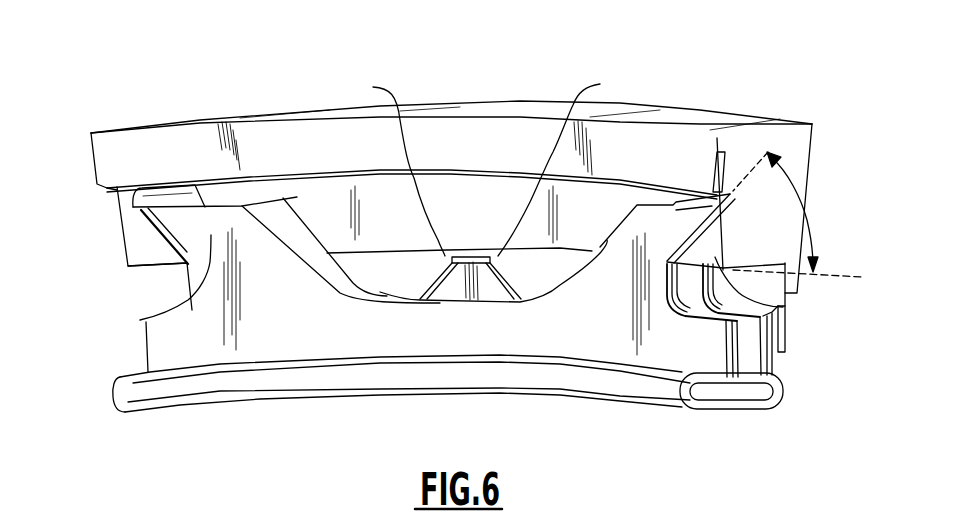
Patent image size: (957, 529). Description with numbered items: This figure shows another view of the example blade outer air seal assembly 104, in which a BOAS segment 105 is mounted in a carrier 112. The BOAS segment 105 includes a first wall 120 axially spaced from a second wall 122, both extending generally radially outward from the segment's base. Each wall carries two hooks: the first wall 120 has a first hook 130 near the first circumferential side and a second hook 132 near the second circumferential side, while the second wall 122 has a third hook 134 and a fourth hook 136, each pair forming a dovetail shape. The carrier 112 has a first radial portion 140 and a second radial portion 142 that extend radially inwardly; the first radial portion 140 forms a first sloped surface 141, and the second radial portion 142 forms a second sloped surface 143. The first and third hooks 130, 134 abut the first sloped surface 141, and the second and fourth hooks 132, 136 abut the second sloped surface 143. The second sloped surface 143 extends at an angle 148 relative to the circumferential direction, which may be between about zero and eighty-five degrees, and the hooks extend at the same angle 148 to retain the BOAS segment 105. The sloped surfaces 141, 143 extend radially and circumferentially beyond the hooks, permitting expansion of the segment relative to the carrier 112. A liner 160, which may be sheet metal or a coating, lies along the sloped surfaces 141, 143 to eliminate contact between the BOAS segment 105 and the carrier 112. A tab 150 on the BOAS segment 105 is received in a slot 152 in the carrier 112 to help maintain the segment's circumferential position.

The BOAS assembly 104 is at (833, 159).
The BOAS segment 105 is at (653, 393).
The carrier 112 is at (524, 135).
The first wall 120 is at (420, 327).
The second wall 122 is at (382, 292).
The first hook 130 is at (140, 320).
The second hook 132 is at (665, 227).
The third hook 134 is at (269, 213).
The fourth hook 136 is at (718, 232).
The first radial portion 140 is at (137, 242).
The first sloped surface 141 is at (165, 237).
The second radial portion 142 is at (786, 308).
The second sloped surface 143 is at (700, 150).
The angle 148 is at (794, 182).
The tab 150 is at (389, 164).
The slot 152 is at (483, 186).
The liner 160 is at (140, 212).